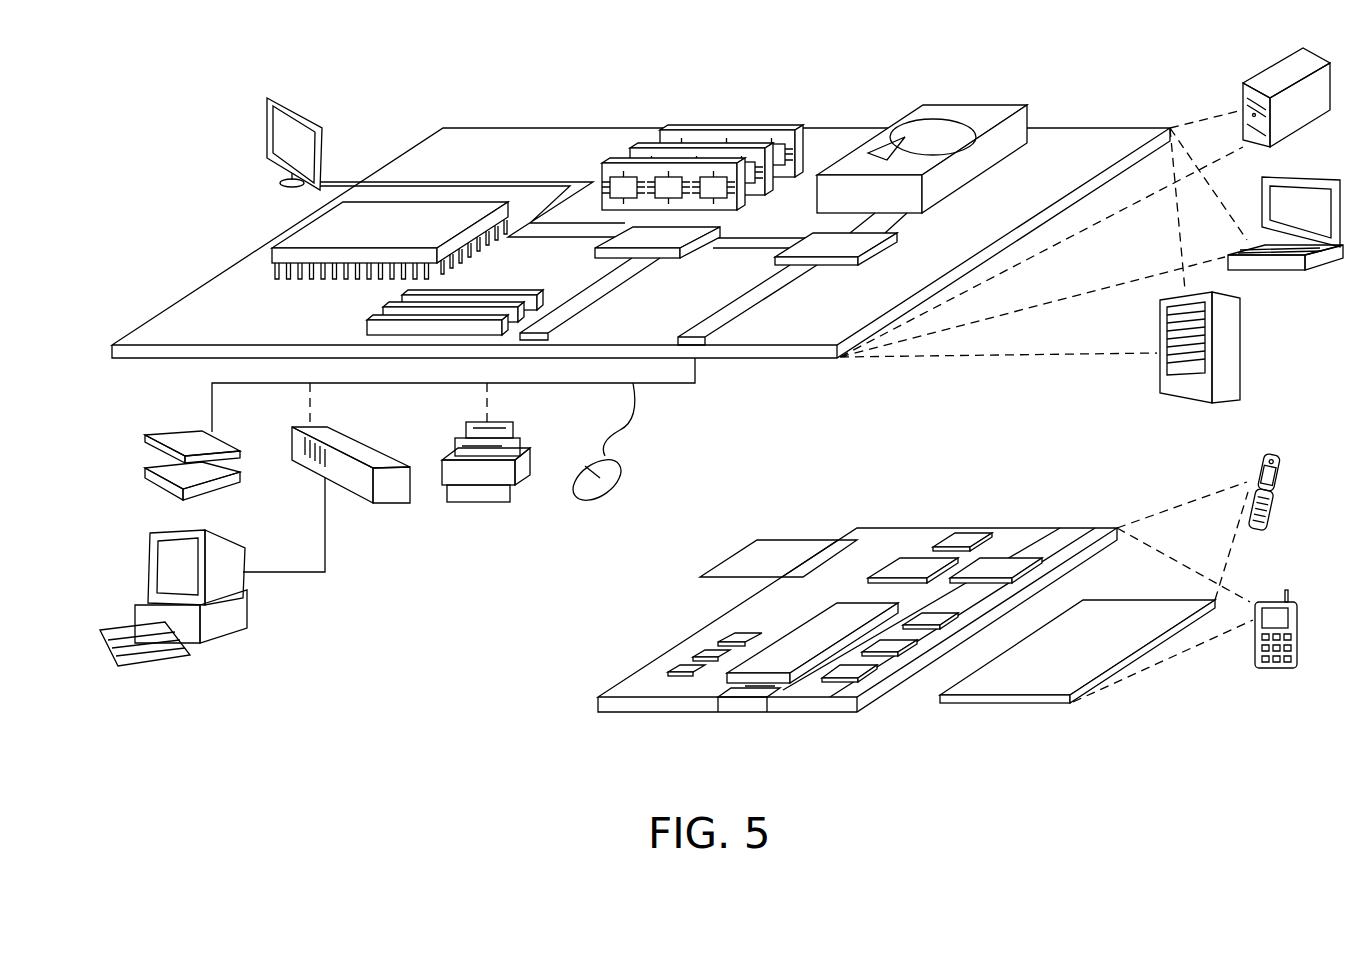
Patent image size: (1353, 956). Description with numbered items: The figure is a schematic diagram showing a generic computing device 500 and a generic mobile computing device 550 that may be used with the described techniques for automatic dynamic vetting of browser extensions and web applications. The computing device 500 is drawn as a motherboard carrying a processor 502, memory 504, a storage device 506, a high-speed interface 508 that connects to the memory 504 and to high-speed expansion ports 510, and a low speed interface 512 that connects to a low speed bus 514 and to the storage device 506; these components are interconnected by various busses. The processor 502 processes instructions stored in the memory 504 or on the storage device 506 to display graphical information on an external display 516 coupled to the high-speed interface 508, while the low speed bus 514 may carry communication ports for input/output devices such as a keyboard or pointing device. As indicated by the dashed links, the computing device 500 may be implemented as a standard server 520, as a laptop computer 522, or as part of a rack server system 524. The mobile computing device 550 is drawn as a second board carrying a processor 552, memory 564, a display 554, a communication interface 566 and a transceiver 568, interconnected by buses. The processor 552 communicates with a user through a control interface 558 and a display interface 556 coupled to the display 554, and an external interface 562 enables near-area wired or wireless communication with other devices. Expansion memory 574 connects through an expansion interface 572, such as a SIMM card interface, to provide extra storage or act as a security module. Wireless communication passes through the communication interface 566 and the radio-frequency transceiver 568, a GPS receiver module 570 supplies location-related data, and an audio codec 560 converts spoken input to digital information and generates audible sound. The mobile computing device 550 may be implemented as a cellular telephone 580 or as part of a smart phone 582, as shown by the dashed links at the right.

The computing device 500 is at (398, 76).
The processor 502 is at (292, 232).
The memory 504 is at (735, 122).
The storage device 506 is at (966, 103).
The high-speed interface 508 is at (664, 240).
The high-speed expansion ports 510 is at (392, 304).
The low speed interface 512 is at (808, 243).
The low speed bus 514 is at (697, 330).
The display 516 is at (270, 100).
The standard server 520 is at (1265, 74).
The laptop computer 522 is at (1318, 176).
The rack server system 524 is at (1240, 345).
The mobile computing device 550 is at (550, 722).
The processor 552 is at (783, 647).
The display 554 is at (1117, 615).
The display interface 556 is at (872, 670).
The control interface 558 is at (898, 647).
The audio codec 560 is at (930, 615).
The external interface 562 is at (745, 698).
The memory 564 is at (700, 652).
The communication interface 566 is at (913, 560).
The transceiver 568 is at (1005, 560).
The GPS receiver module 570 is at (967, 538).
The expansion interface 572 is at (838, 540).
The expansion memory 574 is at (757, 540).
The cellular telephone 580 is at (1258, 455).
The smart phone 582 is at (1272, 600).